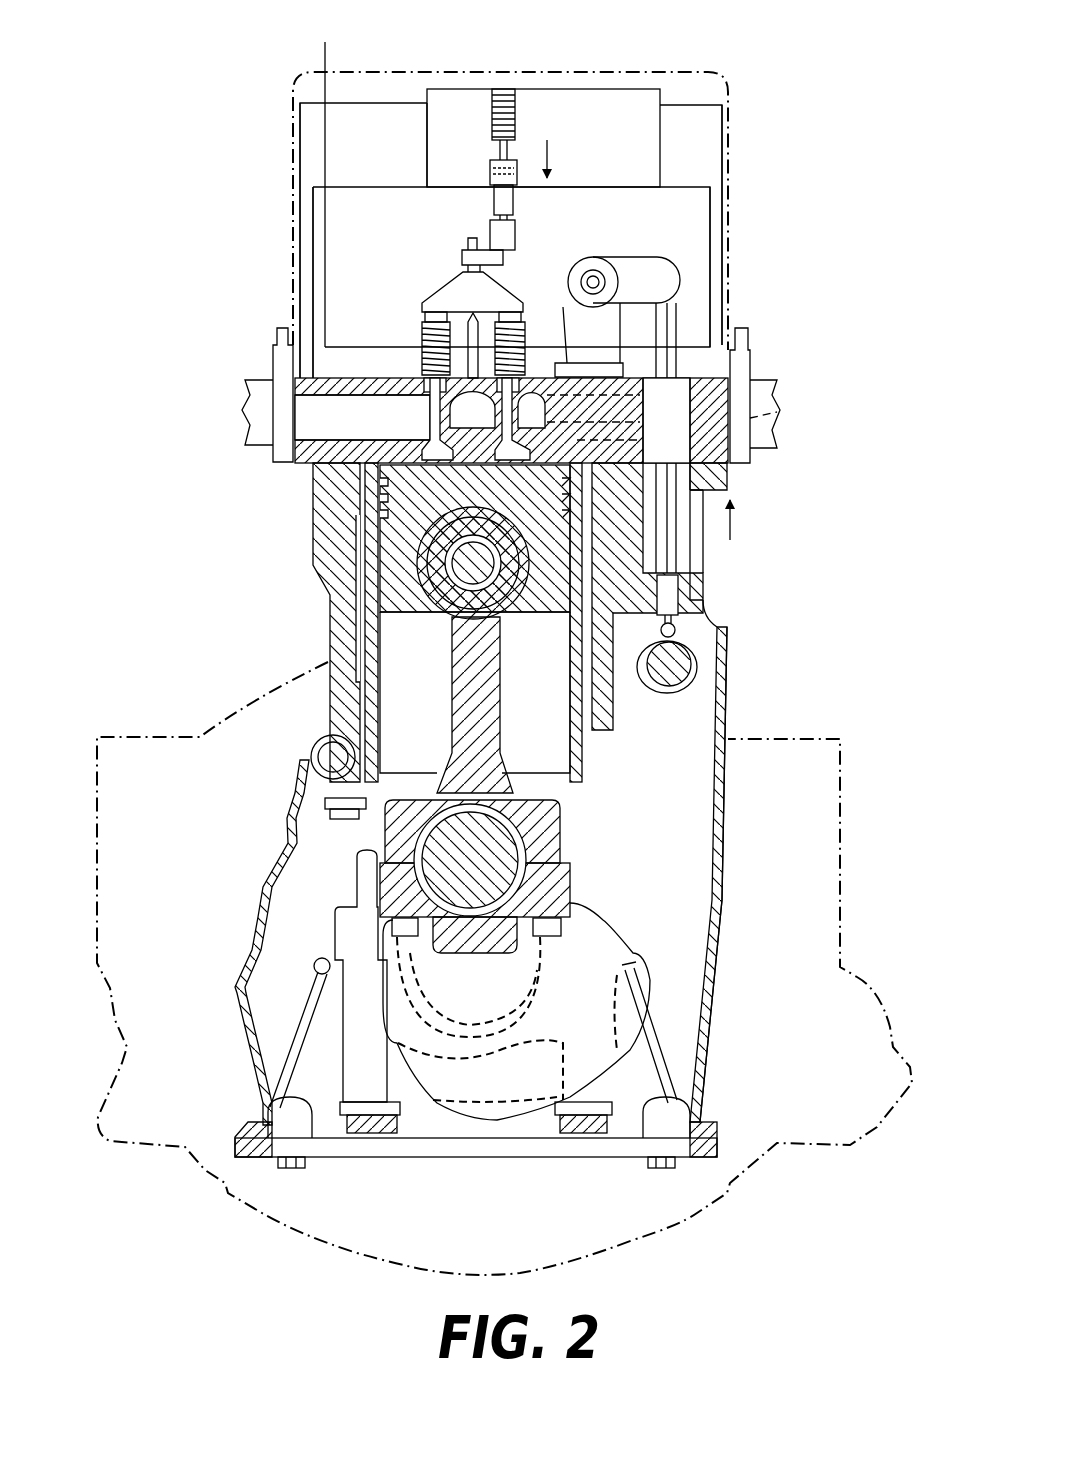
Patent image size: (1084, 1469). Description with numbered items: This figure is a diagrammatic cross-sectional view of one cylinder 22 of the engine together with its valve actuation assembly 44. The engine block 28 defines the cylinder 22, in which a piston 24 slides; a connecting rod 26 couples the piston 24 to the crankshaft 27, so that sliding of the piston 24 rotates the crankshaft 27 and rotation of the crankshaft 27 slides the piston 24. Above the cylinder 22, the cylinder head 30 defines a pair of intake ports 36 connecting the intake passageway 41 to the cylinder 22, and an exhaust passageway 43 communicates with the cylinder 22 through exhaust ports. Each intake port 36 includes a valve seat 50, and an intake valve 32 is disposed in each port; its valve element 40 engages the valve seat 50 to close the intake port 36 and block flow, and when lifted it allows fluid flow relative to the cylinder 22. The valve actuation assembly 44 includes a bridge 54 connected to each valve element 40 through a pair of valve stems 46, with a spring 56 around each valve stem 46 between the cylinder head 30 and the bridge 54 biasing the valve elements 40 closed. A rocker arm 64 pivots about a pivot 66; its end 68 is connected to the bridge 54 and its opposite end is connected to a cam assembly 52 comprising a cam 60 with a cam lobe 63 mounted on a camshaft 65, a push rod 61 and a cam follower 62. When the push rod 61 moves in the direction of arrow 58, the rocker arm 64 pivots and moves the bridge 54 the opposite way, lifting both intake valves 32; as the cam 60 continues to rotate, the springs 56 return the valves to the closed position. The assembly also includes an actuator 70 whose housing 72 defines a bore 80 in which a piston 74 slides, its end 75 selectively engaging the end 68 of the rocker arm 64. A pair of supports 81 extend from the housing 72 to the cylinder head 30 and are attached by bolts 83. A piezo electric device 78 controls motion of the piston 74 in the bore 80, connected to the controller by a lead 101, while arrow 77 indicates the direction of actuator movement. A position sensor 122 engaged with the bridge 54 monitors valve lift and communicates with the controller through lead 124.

The cylinder 22 is at (381, 650).
The piston 24 is at (362, 600).
The connecting rod 26 is at (501, 755).
The crankshaft 27 is at (612, 937).
The engine block 28 is at (328, 745).
The cylinder head 30 is at (747, 452).
The intake valve 32 is at (580, 400).
The intake port 36 is at (677, 392).
The valve element 40 is at (293, 490).
The intake passageway 41 is at (303, 410).
The exhaust passageway 43 is at (795, 403).
The valve actuation assembly 44 is at (768, 122).
The valve stem 46 is at (428, 395).
The valve seat 50 is at (356, 516).
The cam assembly 52 is at (824, 566).
The bridge 54 is at (452, 305).
The spring 56 is at (420, 340).
The arrow 58 is at (731, 530).
The cam 60 is at (637, 672).
The push rod 61 is at (680, 578).
The cam follower 62 is at (717, 628).
The cam lobe 63 is at (633, 720).
The rocker arm 64 is at (650, 266).
The camshaft 65 is at (673, 692).
The pivot 66 is at (597, 272).
The end of rocker arm 68 is at (462, 251).
The actuator 70 is at (405, 97).
The housing 72 is at (430, 150).
The piston 74 is at (494, 207).
The end of piston 75 is at (516, 226).
The actuation direction 77 is at (569, 156).
The piezo electric device 78 is at (523, 110).
The bore 80 is at (490, 172).
The support 81 is at (305, 247).
The bolt 83 is at (275, 326).
The lead 101 is at (505, 78).
The position sensor 122 is at (423, 303).
The lead 124 is at (322, 57).